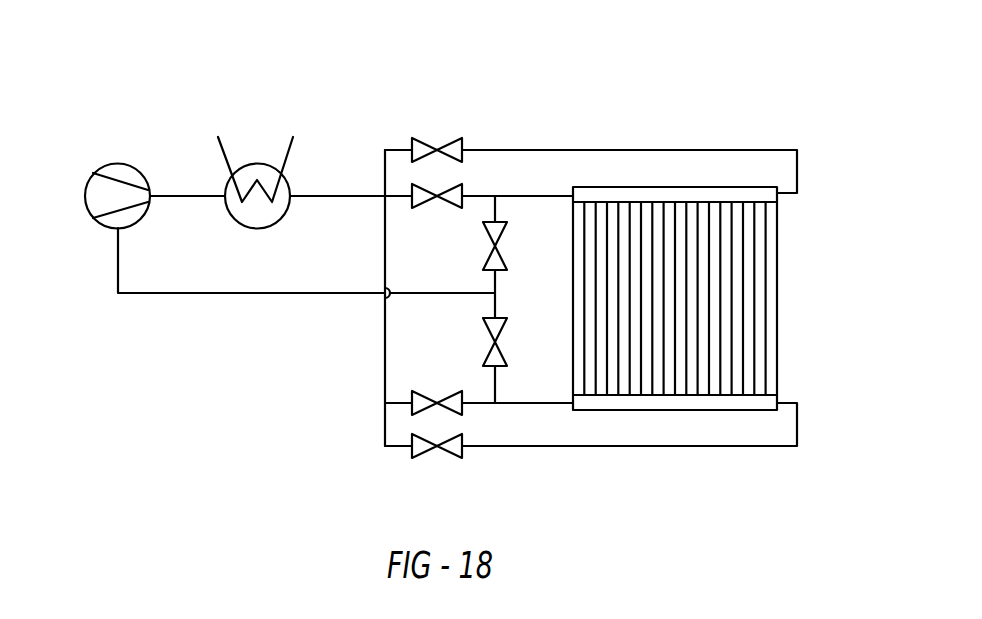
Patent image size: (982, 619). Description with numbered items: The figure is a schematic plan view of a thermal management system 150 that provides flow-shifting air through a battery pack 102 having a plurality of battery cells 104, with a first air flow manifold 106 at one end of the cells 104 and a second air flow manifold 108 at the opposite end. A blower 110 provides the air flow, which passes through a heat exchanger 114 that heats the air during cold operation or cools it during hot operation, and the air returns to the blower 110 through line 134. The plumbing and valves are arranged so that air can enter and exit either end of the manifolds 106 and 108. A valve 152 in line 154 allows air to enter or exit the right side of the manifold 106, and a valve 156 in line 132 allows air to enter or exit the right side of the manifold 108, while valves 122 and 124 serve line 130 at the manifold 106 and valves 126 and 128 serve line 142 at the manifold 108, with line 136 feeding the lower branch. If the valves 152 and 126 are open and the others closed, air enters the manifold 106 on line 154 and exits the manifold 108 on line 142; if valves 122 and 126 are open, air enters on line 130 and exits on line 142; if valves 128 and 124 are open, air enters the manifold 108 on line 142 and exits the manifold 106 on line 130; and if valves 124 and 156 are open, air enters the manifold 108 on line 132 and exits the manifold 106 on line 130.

The thermal management system 150 is at (665, 75).
The blower 110 is at (118, 163).
The heat exchanger 114 is at (260, 228).
The line 130 is at (338, 194).
The line 136 is at (385, 272).
The line 134 is at (243, 293).
The valve 152 is at (447, 142).
The line 154 is at (562, 150).
The valve 122 is at (448, 193).
The valve 124 is at (485, 238).
The valve 126 is at (487, 333).
The valve 128 is at (452, 390).
The line 142 is at (535, 403).
The valve 156 is at (445, 458).
The line 132 is at (578, 448).
The battery pack 102 is at (706, 302).
The first air flow manifold 106 is at (712, 198).
The second air flow manifold 108 is at (677, 402).
The battery cells 104 is at (732, 342).